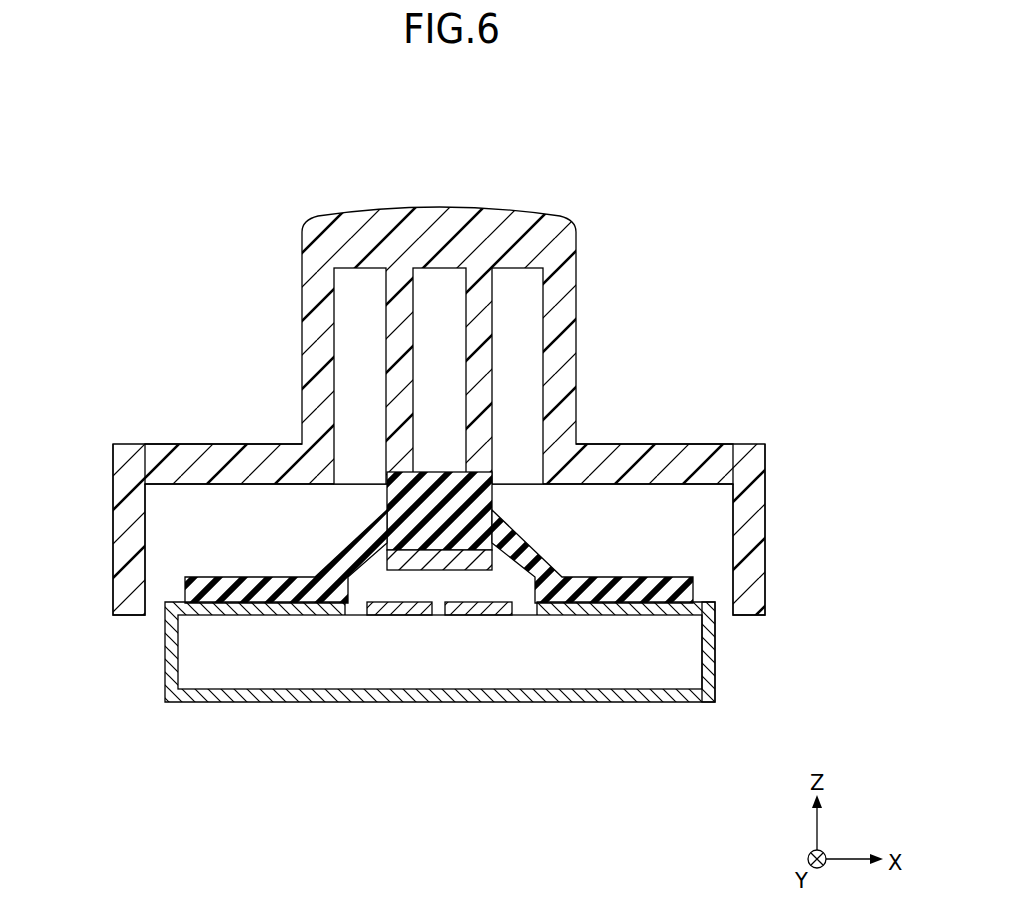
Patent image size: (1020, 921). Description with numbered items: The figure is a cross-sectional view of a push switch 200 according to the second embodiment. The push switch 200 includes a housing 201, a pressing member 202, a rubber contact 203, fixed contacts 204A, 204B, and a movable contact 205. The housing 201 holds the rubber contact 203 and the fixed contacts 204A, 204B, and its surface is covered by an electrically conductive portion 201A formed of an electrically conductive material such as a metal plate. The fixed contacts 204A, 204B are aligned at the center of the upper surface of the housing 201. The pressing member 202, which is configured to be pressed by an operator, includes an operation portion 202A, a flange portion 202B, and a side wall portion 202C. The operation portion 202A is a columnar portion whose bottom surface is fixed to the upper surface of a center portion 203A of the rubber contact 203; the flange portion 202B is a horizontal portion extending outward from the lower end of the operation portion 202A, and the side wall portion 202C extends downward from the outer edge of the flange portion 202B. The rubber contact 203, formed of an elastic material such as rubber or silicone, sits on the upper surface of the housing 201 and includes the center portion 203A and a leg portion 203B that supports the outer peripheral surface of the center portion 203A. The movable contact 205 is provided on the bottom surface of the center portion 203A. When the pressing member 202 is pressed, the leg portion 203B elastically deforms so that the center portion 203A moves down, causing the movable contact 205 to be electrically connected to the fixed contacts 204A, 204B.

The push switch 200 is at (790, 150).
The housing 201 is at (484, 679).
The electrically conductive portion 201A is at (708, 657).
The pressing member 202 is at (439, 399).
The operation portion 202A is at (577, 320).
The flange portion 202B is at (238, 452).
The side wall portion 202C is at (120, 537).
The rubber contact 203 is at (439, 537).
The center portion 203A is at (492, 497).
The leg portion 203B is at (536, 552).
The fixed contact 204A is at (401, 617).
The fixed contact 204B is at (477, 617).
The movable contact 205 is at (487, 557).